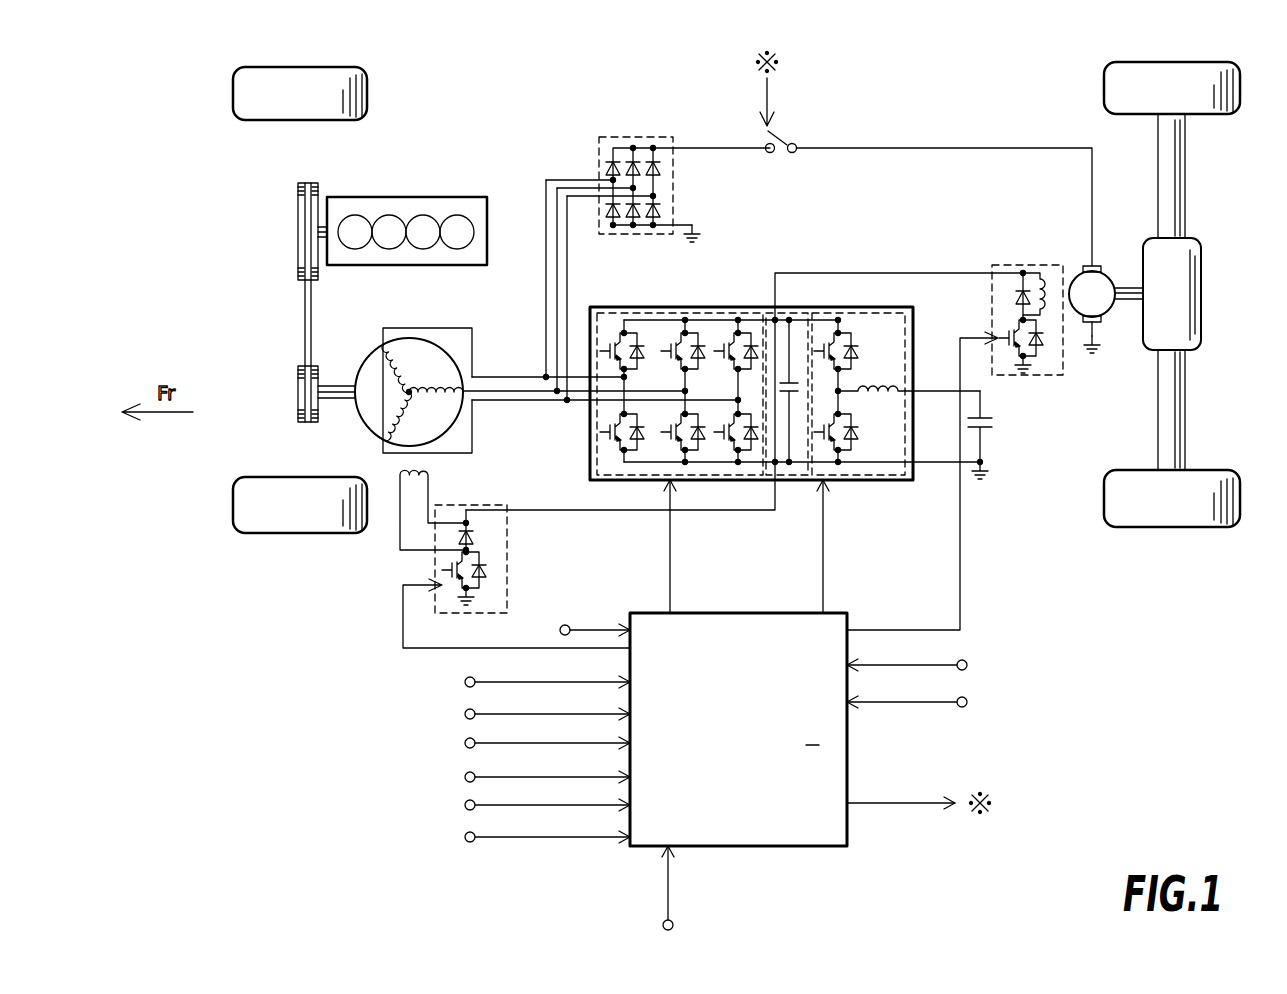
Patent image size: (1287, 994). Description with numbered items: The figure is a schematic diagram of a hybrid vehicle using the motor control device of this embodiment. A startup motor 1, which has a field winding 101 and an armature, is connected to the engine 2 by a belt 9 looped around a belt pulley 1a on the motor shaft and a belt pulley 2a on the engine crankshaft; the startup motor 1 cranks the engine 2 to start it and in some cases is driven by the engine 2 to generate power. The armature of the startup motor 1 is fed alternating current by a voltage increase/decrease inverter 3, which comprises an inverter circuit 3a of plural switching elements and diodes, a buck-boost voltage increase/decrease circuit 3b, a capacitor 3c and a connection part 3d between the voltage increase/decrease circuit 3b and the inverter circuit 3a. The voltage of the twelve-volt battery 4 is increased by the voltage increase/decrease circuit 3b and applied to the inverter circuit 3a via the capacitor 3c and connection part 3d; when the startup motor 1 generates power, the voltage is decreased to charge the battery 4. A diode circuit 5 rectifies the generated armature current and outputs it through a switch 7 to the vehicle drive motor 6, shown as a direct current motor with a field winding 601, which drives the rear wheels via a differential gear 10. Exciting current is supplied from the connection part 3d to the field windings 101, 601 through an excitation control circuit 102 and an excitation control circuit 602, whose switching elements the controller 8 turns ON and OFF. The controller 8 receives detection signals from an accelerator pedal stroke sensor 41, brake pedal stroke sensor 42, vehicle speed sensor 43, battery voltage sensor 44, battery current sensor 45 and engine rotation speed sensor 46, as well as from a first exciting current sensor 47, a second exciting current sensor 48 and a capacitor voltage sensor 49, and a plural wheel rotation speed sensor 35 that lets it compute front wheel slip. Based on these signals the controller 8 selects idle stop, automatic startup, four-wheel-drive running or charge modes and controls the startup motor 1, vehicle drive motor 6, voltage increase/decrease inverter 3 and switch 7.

The startup motor 1 is at (452, 336).
The belt pulley 1a is at (298, 395).
The engine 2 is at (412, 203).
The belt pulley 2a is at (298, 210).
The voltage increase/decrease inverter 3 is at (751, 416).
The inverter circuit 3a is at (704, 476).
The voltage increase/decrease circuit 3b is at (852, 476).
The capacitor 3c is at (783, 482).
The connection part 3d is at (778, 318).
The battery 4 is at (985, 419).
The diode circuit 5 is at (648, 137).
The vehicle drive motor 6 is at (1077, 275).
The switch 7 is at (780, 131).
The controller 8 is at (810, 663).
The belt 9 is at (306, 325).
The differential gear 10 is at (1203, 283).
The plural wheel rotation speed sensor 35 is at (674, 923).
The accelerator pedal stroke sensor 41 is at (465, 680).
The brake pedal stroke sensor 42 is at (465, 712).
The vehicle speed sensor 43 is at (465, 741).
The battery voltage sensor 44 is at (465, 775).
The battery current sensor 45 is at (465, 803).
The engine rotation speed sensor 46 is at (465, 835).
The first exciting current sensor 47 is at (562, 626).
The second exciting current sensor 48 is at (968, 664).
The capacitor voltage sensor 49 is at (968, 701).
The field winding 101 is at (429, 477).
The excitation control circuit 102 is at (503, 553).
The field winding 601 is at (1023, 270).
The excitation control circuit 602 is at (964, 413).